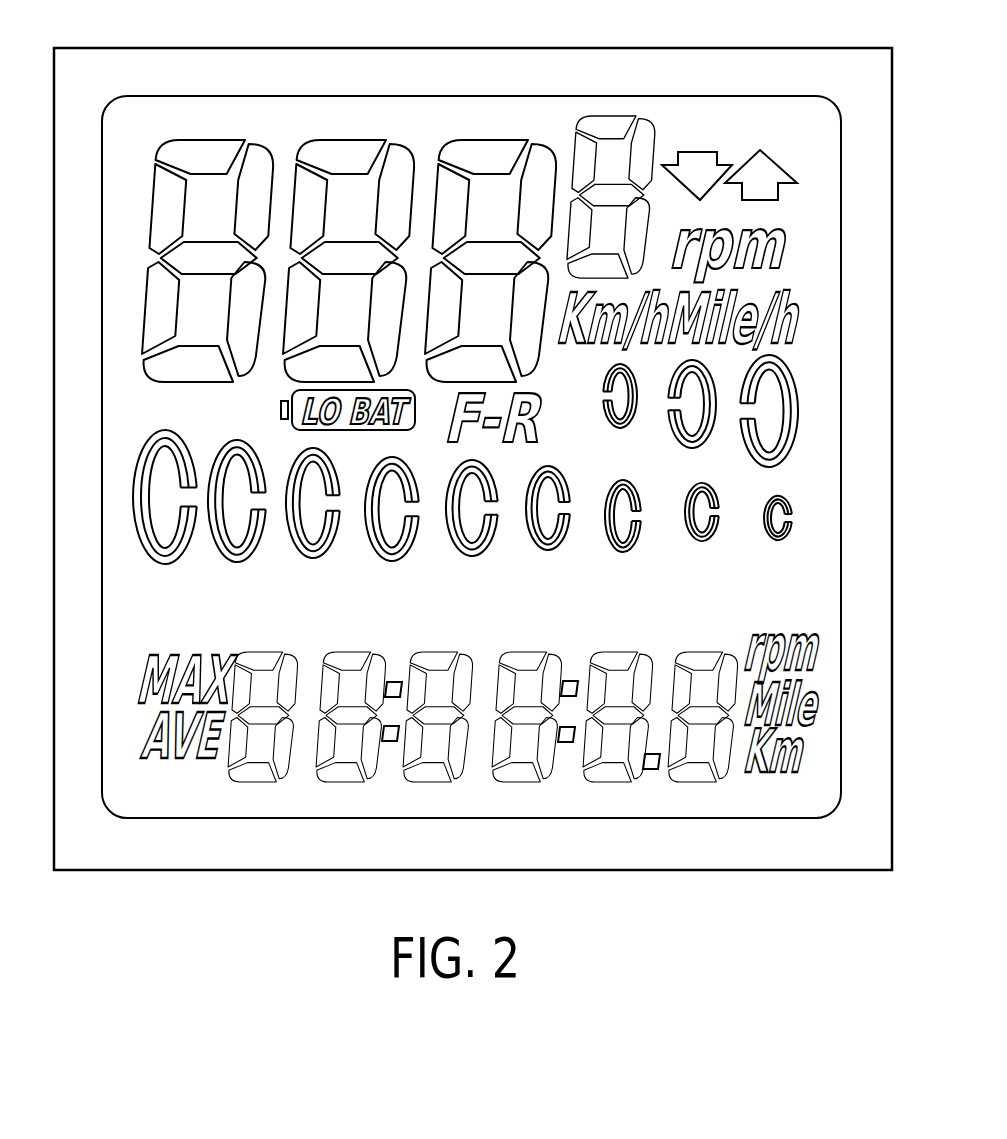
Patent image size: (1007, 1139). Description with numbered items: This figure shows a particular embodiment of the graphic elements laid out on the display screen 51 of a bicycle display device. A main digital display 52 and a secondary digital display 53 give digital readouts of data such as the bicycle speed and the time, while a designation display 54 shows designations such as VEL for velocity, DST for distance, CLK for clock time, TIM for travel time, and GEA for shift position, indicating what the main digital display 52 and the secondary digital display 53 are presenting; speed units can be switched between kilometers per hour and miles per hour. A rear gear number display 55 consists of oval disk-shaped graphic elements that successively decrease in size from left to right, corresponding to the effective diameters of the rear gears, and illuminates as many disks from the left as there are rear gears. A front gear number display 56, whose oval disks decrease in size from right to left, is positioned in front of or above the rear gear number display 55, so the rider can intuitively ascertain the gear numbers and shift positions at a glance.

The display screen 51 is at (432, 100).
The main digital display 52 is at (158, 200).
The secondary digital display 53 is at (247, 777).
The designation display 54 is at (147, 600).
The rear gear number display 55 is at (163, 430).
The front gear number display 56 is at (793, 440).